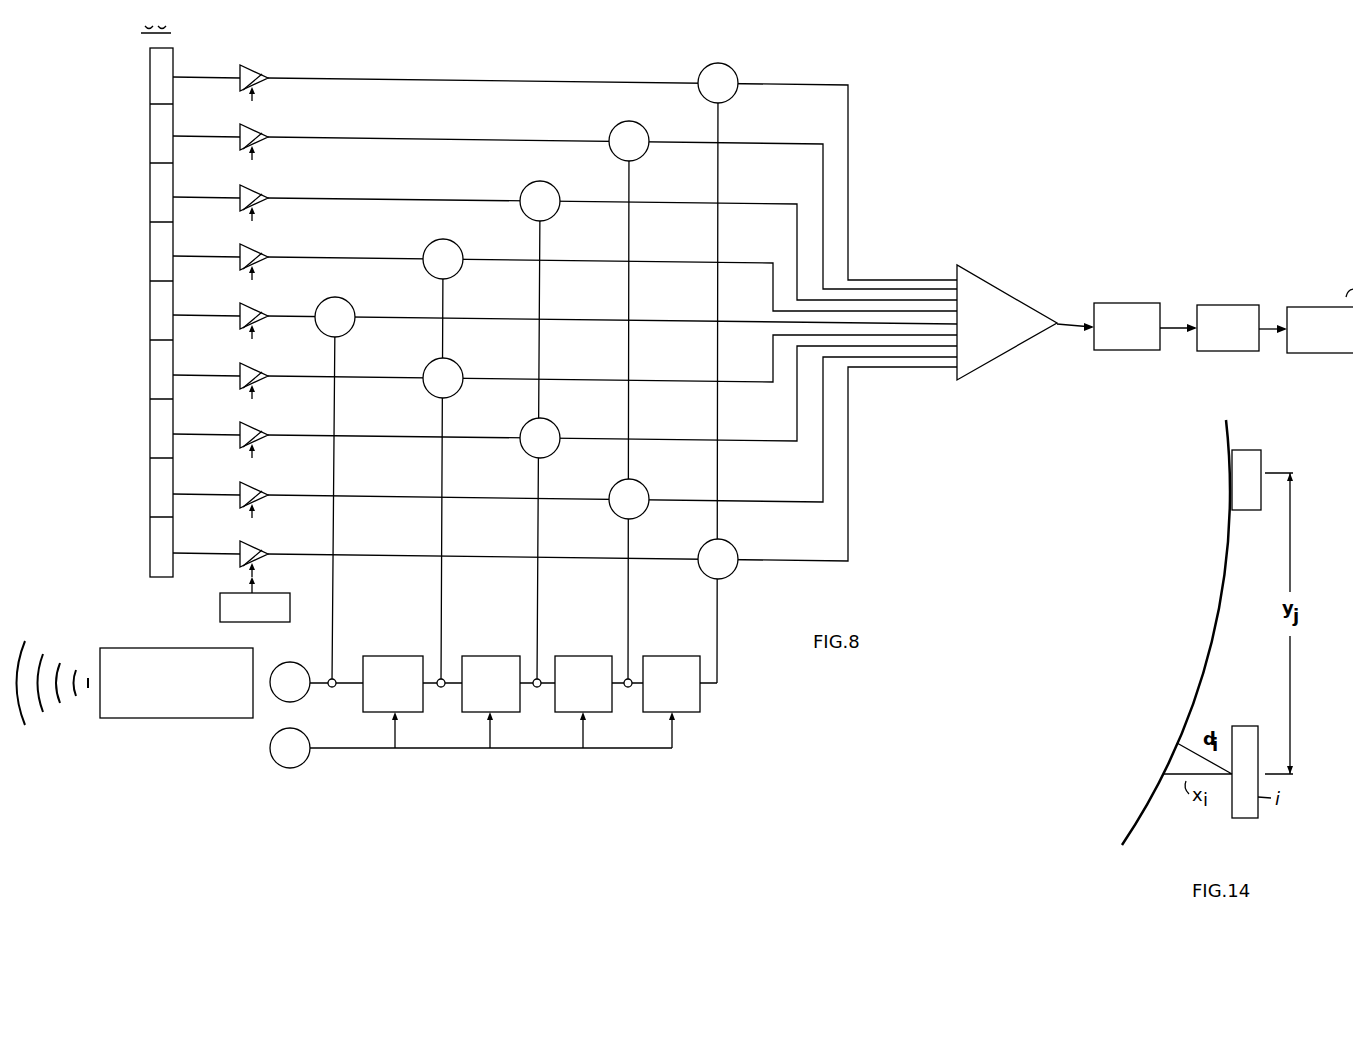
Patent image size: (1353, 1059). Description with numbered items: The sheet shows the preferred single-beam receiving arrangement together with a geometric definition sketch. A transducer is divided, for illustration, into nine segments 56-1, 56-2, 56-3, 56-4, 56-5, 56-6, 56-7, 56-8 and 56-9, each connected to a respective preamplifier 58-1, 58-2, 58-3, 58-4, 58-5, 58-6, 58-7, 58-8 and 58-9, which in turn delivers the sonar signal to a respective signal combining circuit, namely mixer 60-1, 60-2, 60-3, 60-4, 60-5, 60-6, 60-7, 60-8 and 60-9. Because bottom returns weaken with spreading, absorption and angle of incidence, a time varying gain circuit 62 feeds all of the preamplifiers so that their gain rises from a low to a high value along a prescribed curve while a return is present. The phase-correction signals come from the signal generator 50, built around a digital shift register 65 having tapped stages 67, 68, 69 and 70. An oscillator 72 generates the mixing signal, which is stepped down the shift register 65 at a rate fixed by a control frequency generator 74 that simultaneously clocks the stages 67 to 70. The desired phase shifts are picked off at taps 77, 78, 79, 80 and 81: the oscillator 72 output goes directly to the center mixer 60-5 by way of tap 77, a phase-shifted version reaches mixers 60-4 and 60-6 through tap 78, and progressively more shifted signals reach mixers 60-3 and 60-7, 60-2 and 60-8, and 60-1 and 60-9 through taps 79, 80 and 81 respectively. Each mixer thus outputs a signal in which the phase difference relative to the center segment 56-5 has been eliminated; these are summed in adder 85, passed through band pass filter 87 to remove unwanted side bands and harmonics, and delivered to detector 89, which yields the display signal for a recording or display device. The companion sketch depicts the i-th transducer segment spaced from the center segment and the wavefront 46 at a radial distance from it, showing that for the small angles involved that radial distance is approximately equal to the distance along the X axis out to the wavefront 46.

In FIG. 8, the signal generator 50 is at (685, 408).
In FIG. 8, the transducer segment 56-1 is at (148, 81).
In FIG. 8, the transducer segment 56-2 is at (148, 140).
In FIG. 8, the transducer segment 56-3 is at (148, 201).
In FIG. 8, the transducer segment 56-4 is at (148, 260).
In FIG. 8, the center transducer segment 56-5 is at (148, 319).
In FIG. 8, the transducer segment 56-6 is at (148, 379).
In FIG. 8, the transducer segment 56-7 is at (148, 438).
In FIG. 8, the transducer segment 56-8 is at (148, 498).
In FIG. 8, the transducer segment 56-9 is at (148, 557).
In FIG. 8, the preamplifier 58-1 is at (262, 74).
In FIG. 8, the preamplifier 58-2 is at (262, 133).
In FIG. 8, the preamplifier 58-3 is at (262, 194).
In FIG. 8, the preamplifier 58-4 is at (262, 253).
In FIG. 8, the preamplifier 58-5 is at (262, 312).
In FIG. 8, the preamplifier 58-6 is at (262, 372).
In FIG. 8, the preamplifier 58-7 is at (262, 431).
In FIG. 8, the preamplifier 58-8 is at (262, 491).
In FIG. 8, the preamplifier 58-9 is at (262, 550).
In FIG. 8, the mixer 60-1 is at (732, 68).
In FIG. 8, the mixer 60-2 is at (643, 126).
In FIG. 8, the mixer 60-3 is at (554, 186).
In FIG. 8, the mixer 60-4 is at (457, 244).
In FIG. 8, the mixer 60-5 is at (359, 309).
In FIG. 8, the mixer 60-6 is at (457, 363).
In FIG. 8, the mixer 60-7 is at (554, 423).
In FIG. 8, the mixer 60-8 is at (643, 484).
In FIG. 8, the mixer 60-9 is at (732, 544).
In FIG. 8, the time varying gain circuit 62 is at (278, 596).
In FIG. 8, the digital shift register 65 is at (733, 689).
In FIG. 8, the tapped stage 67 is at (412, 713).
In FIG. 8, the tapped stage 68 is at (502, 713).
In FIG. 8, the tapped stage 69 is at (595, 713).
In FIG. 8, the tapped stage 70 is at (692, 713).
In FIG. 8, the oscillator 72 is at (301, 699).
In FIG. 8, the control frequency generator 74 is at (302, 764).
In FIG. 8, the tap 77 is at (334, 650).
In FIG. 8, the tap 78 is at (438, 650).
In FIG. 8, the tap 79 is at (533, 650).
In FIG. 8, the tap 80 is at (626, 650).
In FIG. 8, the tap 81 is at (714, 650).
In FIG. 8, the adder 85 is at (998, 298).
In FIG. 8, the band pass filter 87 is at (1140, 303).
In FIG. 8, the detector 89 is at (1240, 305).
In FIG. 14, the wavefront 46 is at (1204, 660).